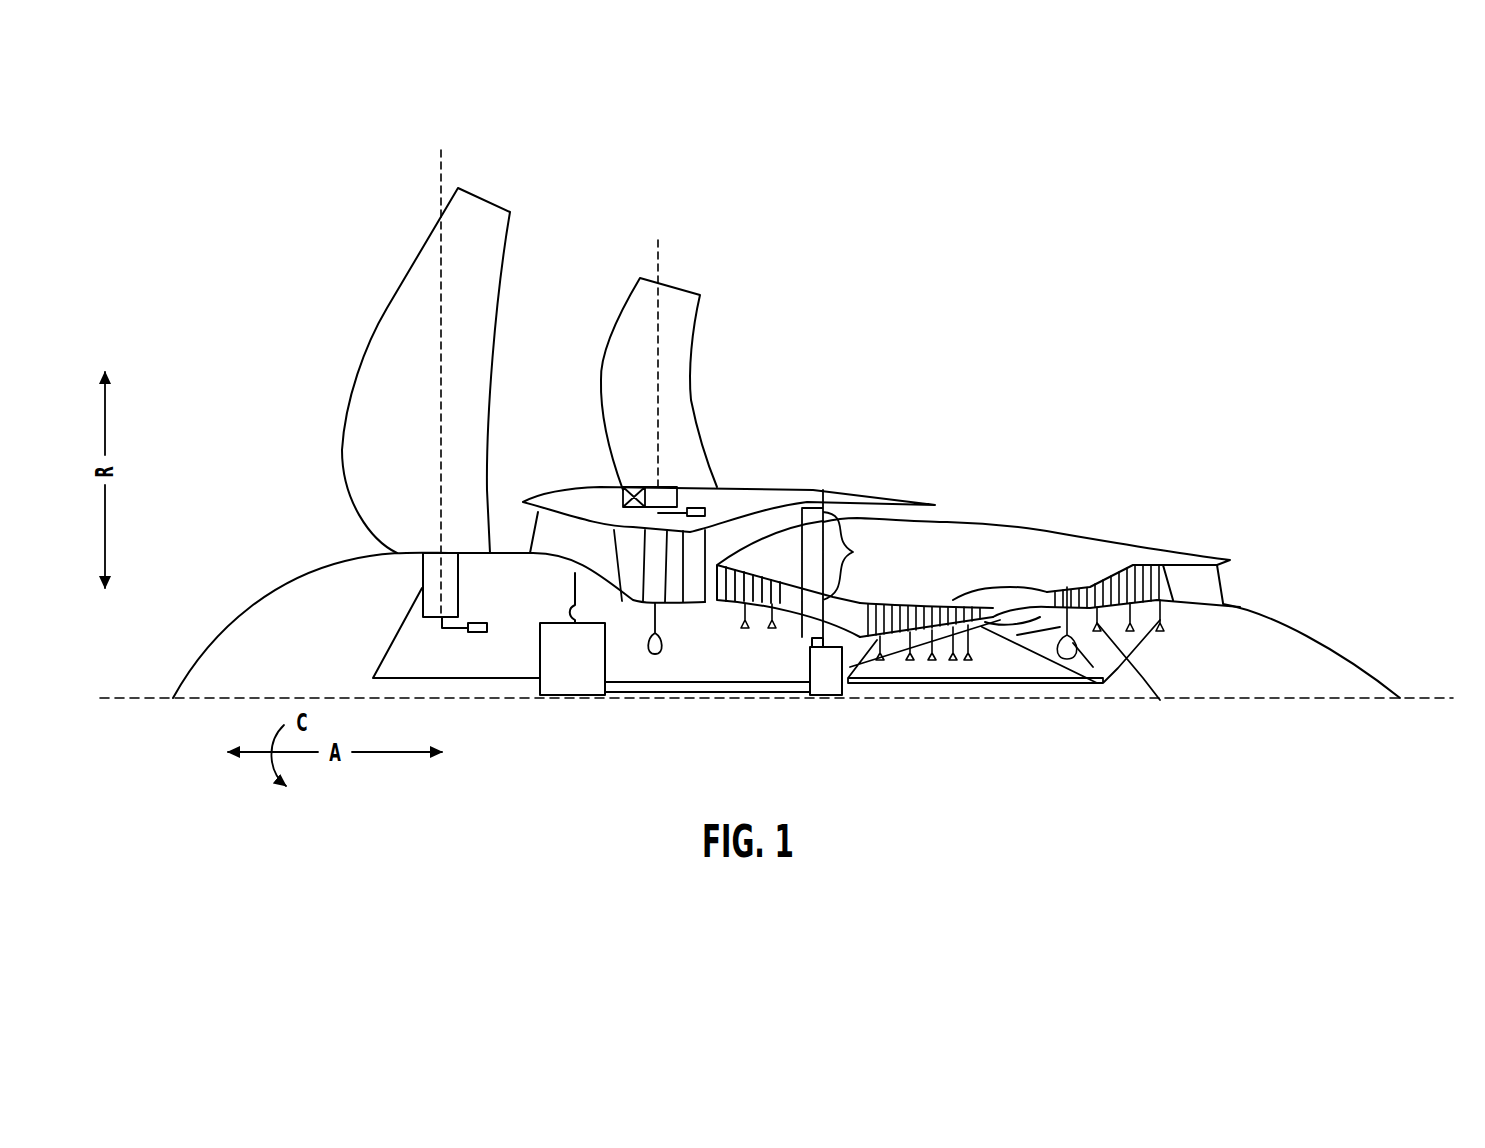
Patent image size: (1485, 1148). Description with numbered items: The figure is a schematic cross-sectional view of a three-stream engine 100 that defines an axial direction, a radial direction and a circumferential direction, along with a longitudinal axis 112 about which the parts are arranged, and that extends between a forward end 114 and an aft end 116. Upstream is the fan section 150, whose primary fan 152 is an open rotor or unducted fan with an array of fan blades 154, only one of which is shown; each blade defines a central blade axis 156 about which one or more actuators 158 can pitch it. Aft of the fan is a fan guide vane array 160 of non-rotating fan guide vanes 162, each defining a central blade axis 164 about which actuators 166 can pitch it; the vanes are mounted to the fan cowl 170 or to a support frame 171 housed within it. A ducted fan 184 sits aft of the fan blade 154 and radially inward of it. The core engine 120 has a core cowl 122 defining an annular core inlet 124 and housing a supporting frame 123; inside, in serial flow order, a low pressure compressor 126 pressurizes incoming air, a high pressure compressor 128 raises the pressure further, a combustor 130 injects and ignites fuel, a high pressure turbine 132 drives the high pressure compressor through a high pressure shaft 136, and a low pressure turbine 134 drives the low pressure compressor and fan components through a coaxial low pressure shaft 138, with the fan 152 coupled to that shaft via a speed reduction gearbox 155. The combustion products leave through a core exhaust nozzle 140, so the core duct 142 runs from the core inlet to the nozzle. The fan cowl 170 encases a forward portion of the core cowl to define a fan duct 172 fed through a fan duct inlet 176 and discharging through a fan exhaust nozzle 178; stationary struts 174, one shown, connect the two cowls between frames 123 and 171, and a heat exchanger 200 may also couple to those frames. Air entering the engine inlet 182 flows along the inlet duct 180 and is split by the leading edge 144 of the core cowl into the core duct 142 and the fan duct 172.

The three-stream engine 100 is at (860, 218).
The longitudinal axis 112 is at (1440, 700).
The forward end 114 is at (171, 697).
The aft end 116 is at (1400, 700).
The core engine 120 is at (957, 595).
The core cowl 122 is at (948, 521).
The supporting frame 123 is at (813, 490).
The core inlet 124 is at (709, 599).
The low pressure compressor 126 is at (758, 617).
The high pressure compressor 128 is at (941, 647).
The combustor 130 is at (1004, 627).
The high pressure turbine 132 is at (1069, 576).
The low pressure turbine 134 is at (1141, 560).
The high pressure shaft 136 is at (1088, 660).
The low pressure shaft 138 is at (387, 648).
The core exhaust nozzle 140 is at (1200, 582).
The core duct 142 is at (1024, 597).
The leading edge 144 is at (745, 606).
The fan section 150 is at (277, 243).
The fan 152 is at (306, 418).
The fan blade 154 is at (402, 313).
The speed reduction gearbox 155 is at (567, 667).
The central blade axis 156 is at (441, 180).
The actuator 158 is at (477, 616).
The fan guide vane array 160 is at (575, 303).
The fan guide vane 162 is at (680, 368).
The central blade axis 164 is at (660, 265).
The actuator 166 is at (701, 505).
The fan cowl 170 is at (779, 508).
The support frame 171 is at (636, 490).
The fan duct 172 is at (827, 637).
The stationary strut 174 is at (852, 553).
The fan duct inlet 176 is at (712, 552).
The fan exhaust nozzle 178 is at (933, 503).
The inlet duct 180 is at (625, 582).
The engine inlet 182 is at (520, 528).
The ducted fan 184 is at (655, 548).
The heat exchanger 200 is at (706, 517).